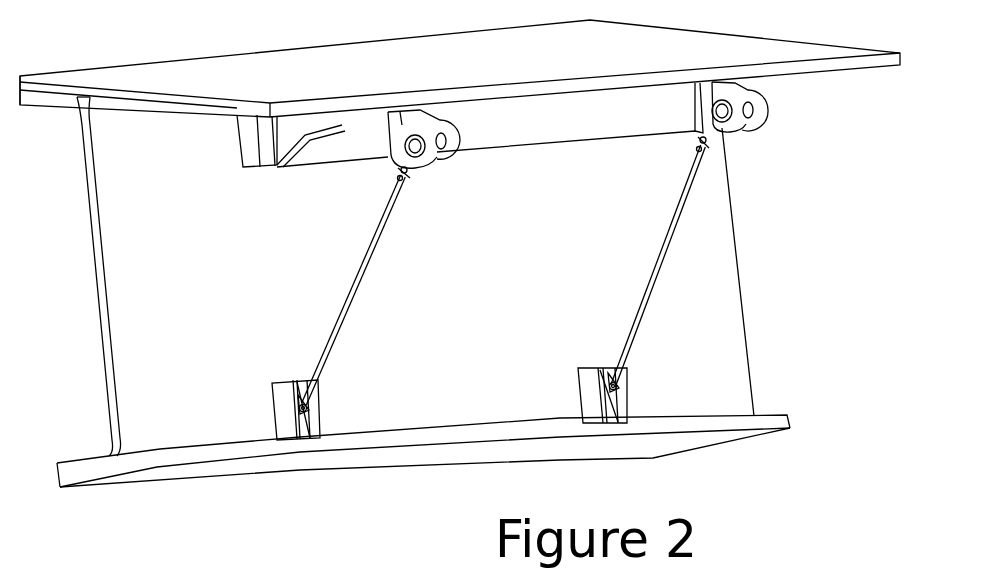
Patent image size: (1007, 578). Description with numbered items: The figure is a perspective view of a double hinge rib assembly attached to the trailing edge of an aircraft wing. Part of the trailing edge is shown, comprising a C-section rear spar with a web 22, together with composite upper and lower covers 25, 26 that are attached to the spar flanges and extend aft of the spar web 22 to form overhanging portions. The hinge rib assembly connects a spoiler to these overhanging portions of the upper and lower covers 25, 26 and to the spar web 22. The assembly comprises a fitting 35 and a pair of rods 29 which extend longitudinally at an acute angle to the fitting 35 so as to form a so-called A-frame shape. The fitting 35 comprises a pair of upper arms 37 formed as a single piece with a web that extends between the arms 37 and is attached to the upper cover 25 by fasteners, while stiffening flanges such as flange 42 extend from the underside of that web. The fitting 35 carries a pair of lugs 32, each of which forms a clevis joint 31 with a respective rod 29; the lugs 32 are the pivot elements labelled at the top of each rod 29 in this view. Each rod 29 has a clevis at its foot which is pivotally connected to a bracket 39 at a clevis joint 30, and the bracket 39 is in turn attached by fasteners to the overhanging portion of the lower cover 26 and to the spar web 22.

The web 22 is at (106, 284).
The upper cover 25 is at (318, 75).
The lower cover 26 is at (358, 460).
The rod 29 is at (363, 270).
The clevis joint 30 is at (305, 408).
The clevis joint 31 is at (405, 170).
The clevis bracket 32 is at (440, 146).
The fitting 35 is at (212, 147).
The upper arm 37 is at (338, 128).
The bracket 39 is at (595, 386).
The stiffening flange 42 is at (590, 113).